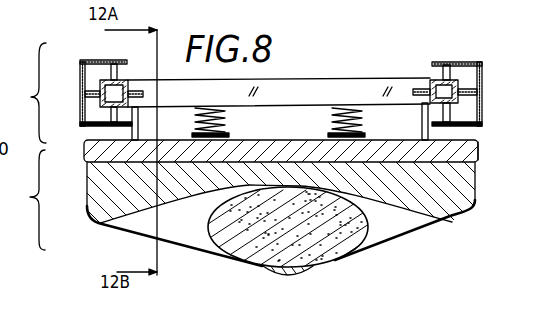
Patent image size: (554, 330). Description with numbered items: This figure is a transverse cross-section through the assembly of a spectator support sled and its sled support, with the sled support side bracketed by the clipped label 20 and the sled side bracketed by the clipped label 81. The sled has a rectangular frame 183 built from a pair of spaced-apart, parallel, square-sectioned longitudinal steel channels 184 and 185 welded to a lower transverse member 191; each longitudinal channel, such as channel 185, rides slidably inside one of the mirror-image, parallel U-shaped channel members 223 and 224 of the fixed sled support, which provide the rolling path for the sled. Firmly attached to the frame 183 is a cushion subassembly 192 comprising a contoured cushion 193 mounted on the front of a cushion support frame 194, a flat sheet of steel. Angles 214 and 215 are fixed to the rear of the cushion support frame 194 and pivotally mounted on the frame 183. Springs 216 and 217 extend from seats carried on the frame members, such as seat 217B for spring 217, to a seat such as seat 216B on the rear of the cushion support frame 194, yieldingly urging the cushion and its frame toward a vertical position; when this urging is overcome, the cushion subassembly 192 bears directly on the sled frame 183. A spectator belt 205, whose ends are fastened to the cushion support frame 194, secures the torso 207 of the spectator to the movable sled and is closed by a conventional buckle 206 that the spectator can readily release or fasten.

The frame assembly 20 is at (25, 93).
The lens assembly 81 is at (29, 197).
The rectangular frame 183 is at (383, 80).
The longitudinal steel channel 184 is at (458, 103).
The longitudinal steel channel 185 is at (100, 107).
The lower transverse member 191 is at (307, 97).
The cushion subassembly 192 is at (87, 176).
The contoured cushion 193 is at (118, 198).
The cushion support frame 194 is at (479, 146).
The spectator belt 205 is at (433, 217).
The buckle 206 is at (268, 276).
The spectator torso 207 is at (375, 250).
The angle 214 is at (422, 131).
The angle 215 is at (140, 131).
The spring 216 is at (229, 121).
The spring seat 216B is at (230, 141).
The spring 217 is at (332, 127).
The spring seat 217B is at (368, 133).
The U-shaped channel member 223 is at (481, 79).
The U-shaped channel member 224 is at (85, 94).